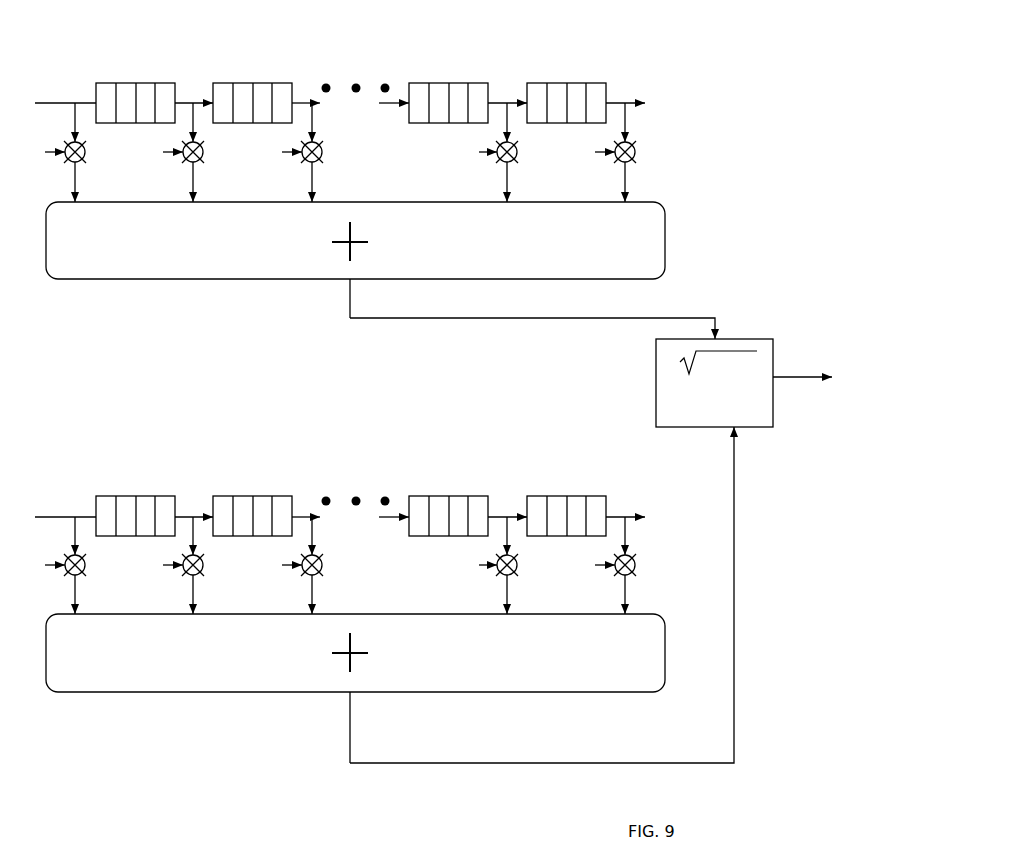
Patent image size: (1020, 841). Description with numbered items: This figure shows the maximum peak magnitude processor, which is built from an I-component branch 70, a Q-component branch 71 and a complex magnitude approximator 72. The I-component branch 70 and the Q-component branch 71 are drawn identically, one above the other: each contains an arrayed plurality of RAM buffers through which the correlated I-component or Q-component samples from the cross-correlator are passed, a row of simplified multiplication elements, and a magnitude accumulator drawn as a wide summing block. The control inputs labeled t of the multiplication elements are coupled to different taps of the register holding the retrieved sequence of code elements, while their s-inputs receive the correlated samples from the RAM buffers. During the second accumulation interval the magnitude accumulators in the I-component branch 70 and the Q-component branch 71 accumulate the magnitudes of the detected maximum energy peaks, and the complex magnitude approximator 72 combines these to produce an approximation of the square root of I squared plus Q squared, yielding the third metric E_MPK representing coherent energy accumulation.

The I-component branch 70 is at (382, 168).
The Q-component branch 71 is at (368, 589).
The complex magnitude approximator 72 is at (653, 367).